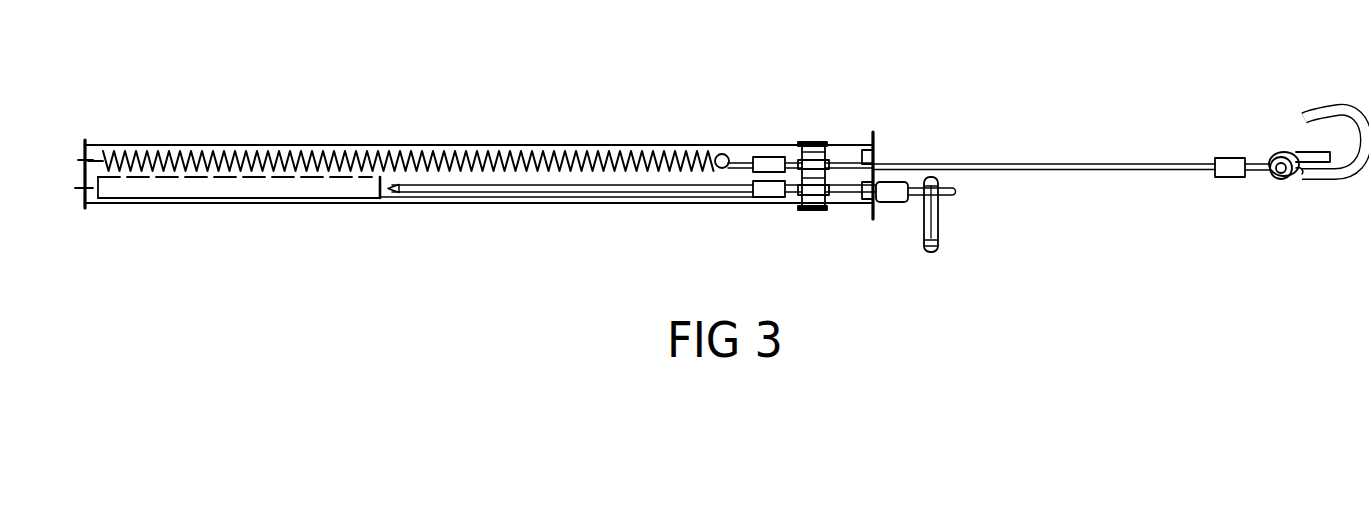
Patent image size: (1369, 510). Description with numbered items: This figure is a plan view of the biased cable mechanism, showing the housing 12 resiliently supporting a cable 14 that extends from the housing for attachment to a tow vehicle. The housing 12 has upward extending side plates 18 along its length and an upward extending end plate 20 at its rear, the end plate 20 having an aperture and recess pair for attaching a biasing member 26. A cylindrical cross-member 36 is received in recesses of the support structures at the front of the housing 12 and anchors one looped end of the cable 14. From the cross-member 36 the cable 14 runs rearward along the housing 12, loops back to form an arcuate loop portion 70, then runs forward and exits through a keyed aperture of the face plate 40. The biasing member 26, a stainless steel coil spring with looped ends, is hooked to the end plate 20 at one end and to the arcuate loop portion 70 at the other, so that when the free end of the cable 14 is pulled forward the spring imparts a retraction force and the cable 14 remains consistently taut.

The housing 12 is at (277, 134).
The cable 14 is at (1115, 164).
The side plate 18 is at (430, 145).
The end plate 20 is at (85, 145).
The biasing member 26 is at (531, 151).
The cross-member 36 is at (809, 124).
The face plate 40 is at (889, 128).
The arcuate loop portion 70 is at (722, 162).